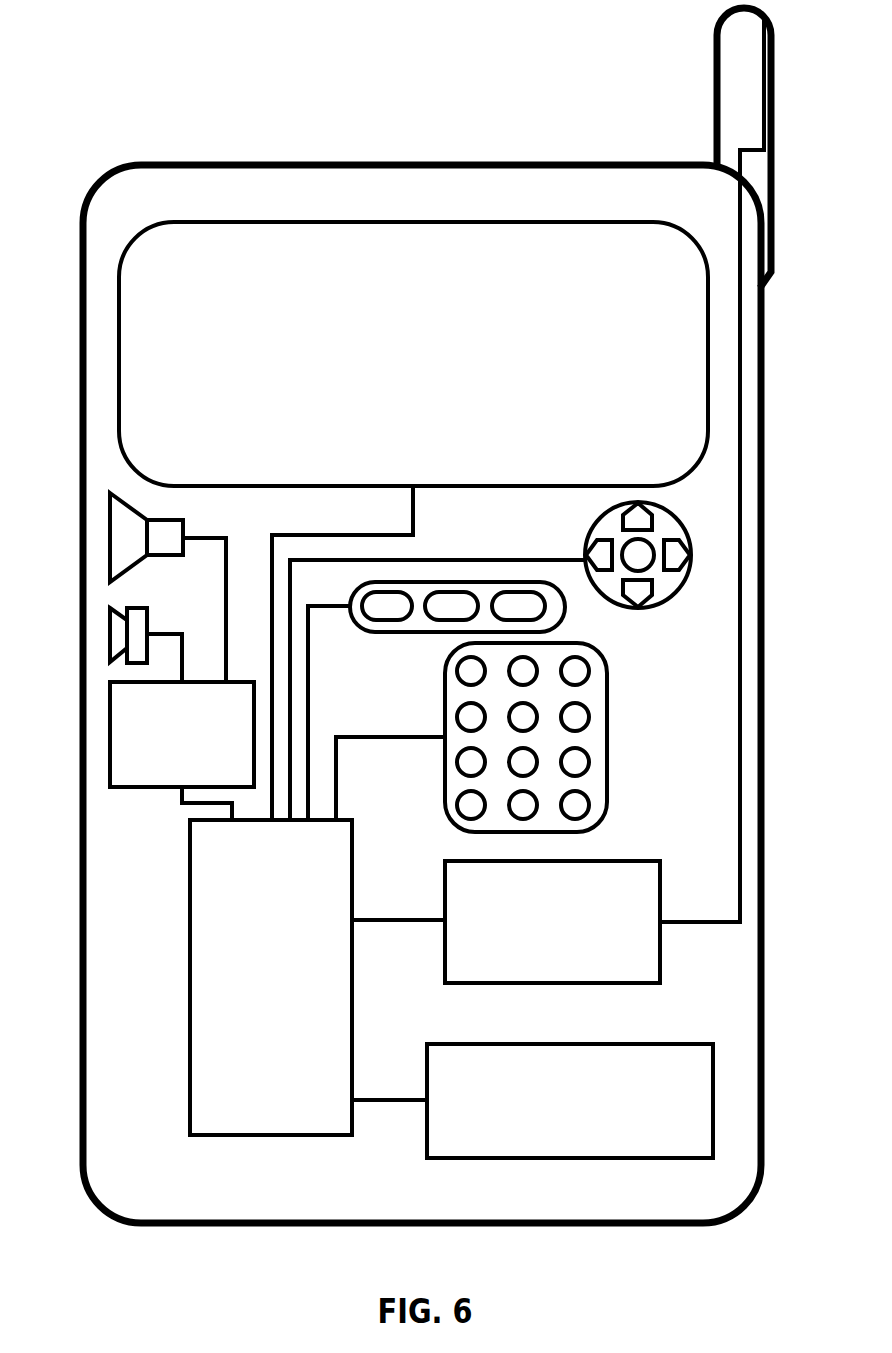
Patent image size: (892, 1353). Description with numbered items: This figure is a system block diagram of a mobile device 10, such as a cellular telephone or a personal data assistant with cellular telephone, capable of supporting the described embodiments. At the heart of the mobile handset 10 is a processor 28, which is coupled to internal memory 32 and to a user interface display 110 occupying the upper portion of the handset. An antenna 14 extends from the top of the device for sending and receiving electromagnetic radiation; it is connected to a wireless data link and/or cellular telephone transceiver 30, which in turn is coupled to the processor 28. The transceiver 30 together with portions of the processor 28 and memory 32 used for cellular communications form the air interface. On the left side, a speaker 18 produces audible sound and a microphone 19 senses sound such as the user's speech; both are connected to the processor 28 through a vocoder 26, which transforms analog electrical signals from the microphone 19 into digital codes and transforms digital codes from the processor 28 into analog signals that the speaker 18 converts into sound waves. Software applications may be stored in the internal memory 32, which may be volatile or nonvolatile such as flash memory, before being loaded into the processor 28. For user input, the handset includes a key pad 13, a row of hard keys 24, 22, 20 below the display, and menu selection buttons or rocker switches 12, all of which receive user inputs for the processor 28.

The mobile device 10 is at (418, 165).
The antenna 14 is at (716, 46).
The user interface display 110 is at (375, 357).
The speaker 18 is at (183, 533).
The microphone 19 is at (150, 614).
The vocoder 26 is at (168, 746).
The processor 28 is at (262, 991).
The transceiver 30 is at (539, 933).
The internal memory 32 is at (556, 1113).
The menu selection buttons or rocker switches 12 is at (638, 608).
The key pad 13 is at (607, 735).
The hard key 24 is at (376, 616).
The hard key 22 is at (440, 616).
The hard key 20 is at (507, 616).